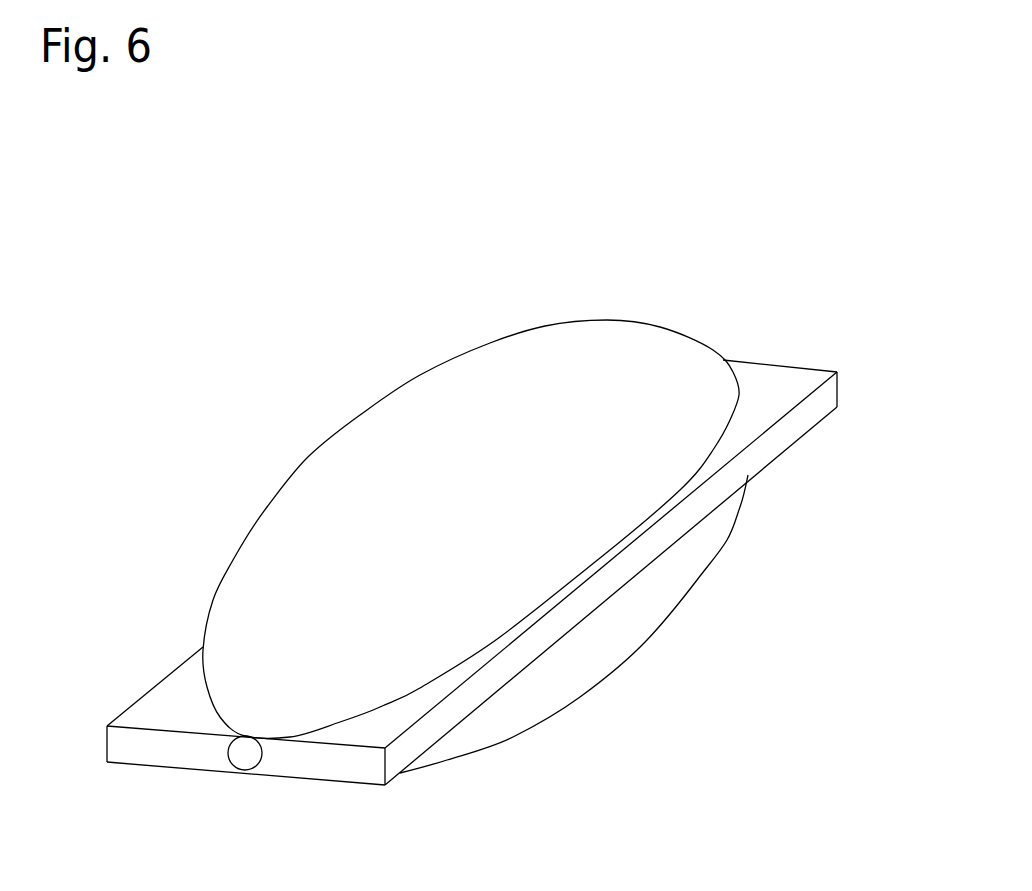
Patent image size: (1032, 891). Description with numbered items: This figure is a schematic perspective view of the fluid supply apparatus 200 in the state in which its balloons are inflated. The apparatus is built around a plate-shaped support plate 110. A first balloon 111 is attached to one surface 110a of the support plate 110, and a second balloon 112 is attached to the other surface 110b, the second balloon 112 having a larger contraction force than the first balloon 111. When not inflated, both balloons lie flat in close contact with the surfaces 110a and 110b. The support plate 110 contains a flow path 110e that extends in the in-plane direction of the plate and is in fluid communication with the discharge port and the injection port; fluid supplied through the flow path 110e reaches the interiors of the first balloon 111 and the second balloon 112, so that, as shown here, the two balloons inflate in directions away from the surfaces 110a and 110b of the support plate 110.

The fluid supply apparatus 200 is at (697, 305).
The support plate 110 is at (823, 402).
The one surface of the support plate 110a is at (180, 703).
The other surface of the support plate 110b is at (623, 605).
The flow path 110e is at (243, 772).
The first balloon 111 is at (367, 443).
The second balloon 112 is at (547, 670).